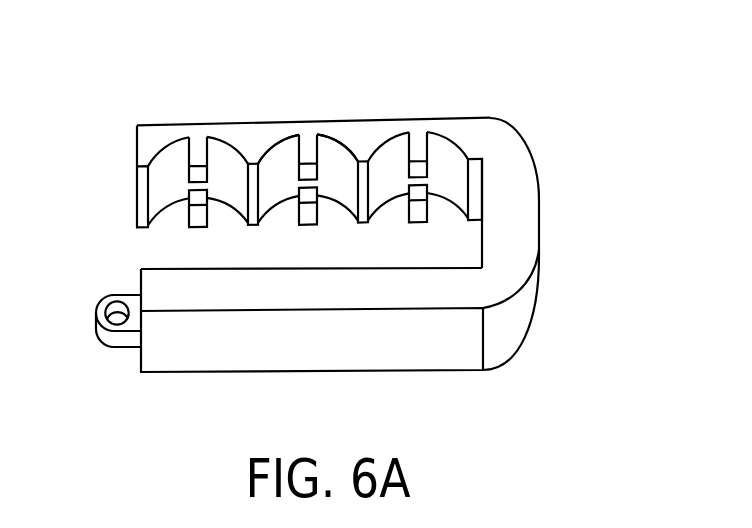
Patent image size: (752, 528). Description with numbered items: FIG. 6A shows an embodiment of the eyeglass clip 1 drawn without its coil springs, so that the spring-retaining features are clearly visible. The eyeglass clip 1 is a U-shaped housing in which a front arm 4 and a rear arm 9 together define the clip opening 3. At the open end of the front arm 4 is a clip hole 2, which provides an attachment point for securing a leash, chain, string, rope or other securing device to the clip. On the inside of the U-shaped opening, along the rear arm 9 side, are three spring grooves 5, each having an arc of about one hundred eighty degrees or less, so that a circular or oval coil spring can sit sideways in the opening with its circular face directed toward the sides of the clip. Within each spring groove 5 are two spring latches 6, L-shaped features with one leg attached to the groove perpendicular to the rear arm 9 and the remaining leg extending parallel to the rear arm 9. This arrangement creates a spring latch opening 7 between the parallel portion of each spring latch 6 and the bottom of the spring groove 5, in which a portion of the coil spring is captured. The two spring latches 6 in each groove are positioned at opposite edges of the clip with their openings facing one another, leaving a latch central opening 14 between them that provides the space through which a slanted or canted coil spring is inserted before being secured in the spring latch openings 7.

The eyeglass clip 1 is at (530, 157).
The clip hole 2 is at (101, 299).
The clip opening 3 is at (106, 239).
The front arm 4 is at (181, 358).
The spring groove 5 is at (457, 162).
The spring latch 6 is at (418, 146).
The spring latch opening 7 is at (325, 158).
The rear arm 9 is at (155, 125).
The latch central opening 14 is at (201, 187).